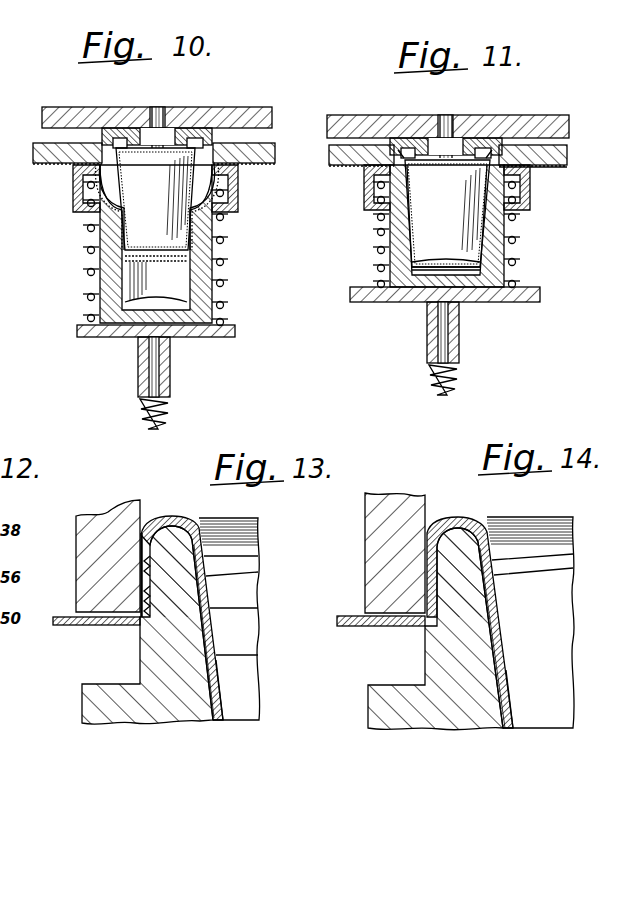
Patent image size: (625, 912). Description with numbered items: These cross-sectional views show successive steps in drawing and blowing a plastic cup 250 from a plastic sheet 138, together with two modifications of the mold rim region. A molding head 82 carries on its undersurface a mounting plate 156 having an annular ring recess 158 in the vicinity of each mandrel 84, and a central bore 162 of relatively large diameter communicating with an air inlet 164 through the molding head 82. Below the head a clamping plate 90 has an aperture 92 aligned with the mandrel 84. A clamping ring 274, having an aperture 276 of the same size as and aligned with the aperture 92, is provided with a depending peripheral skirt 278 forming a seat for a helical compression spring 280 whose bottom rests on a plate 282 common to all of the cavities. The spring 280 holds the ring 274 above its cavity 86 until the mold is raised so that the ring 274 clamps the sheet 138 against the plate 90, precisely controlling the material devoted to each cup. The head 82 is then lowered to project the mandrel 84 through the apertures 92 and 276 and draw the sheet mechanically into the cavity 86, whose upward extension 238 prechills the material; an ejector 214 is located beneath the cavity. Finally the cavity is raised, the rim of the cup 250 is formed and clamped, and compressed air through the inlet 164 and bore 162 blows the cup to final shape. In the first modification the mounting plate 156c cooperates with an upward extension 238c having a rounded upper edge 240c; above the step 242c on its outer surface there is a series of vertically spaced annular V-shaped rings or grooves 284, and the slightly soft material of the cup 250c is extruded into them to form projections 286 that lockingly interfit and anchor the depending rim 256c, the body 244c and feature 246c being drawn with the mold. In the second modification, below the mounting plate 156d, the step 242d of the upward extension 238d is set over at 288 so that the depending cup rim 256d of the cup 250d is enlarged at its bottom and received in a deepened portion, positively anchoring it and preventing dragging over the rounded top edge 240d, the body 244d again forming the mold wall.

In FIG. 10, the molding head 82 is at (225, 107).
In FIG. 11, the molding head 82 is at (532, 115).
In FIG. 10, the mandrel 84 is at (125, 245).
In FIG. 11, the mandrel 84 is at (380, 232).
In FIG. 10, the cavity 86 is at (172, 272).
In FIG. 11, the cavity 86 is at (500, 235).
In FIG. 10, the clamping plate 90 is at (275, 150).
In FIG. 11, the clamping plate 90 is at (568, 160).
In FIG. 10, the aperture 92 is at (214, 140).
In FIG. 10, the plastic sheet 138 is at (270, 164).
In FIG. 10, the mounting plate 156 is at (100, 134).
In FIG. 11, the mounting plate 156 is at (398, 150).
In FIG. 11, the annular ring recess 158 is at (545, 168).
In FIG. 11, the central bore 162 is at (456, 140).
In FIG. 11, the air inlet 164 is at (441, 140).
In FIG. 10, the ejector 214 is at (155, 364).
In FIG. 11, the ejector 214 is at (445, 336).
In FIG. 10, the upward extension 238 is at (125, 225).
In FIG. 11, the cup 250 is at (400, 252).
In FIG. 10, the clamping ring 274 is at (75, 180).
In FIG. 11, the clamping ring 274 is at (532, 195).
In FIG. 10, the aperture 276 is at (80, 200).
In FIG. 11, the aperture 276 is at (366, 172).
In FIG. 10, the depending peripheral skirt 278 is at (240, 192).
In FIG. 11, the depending peripheral skirt 278 is at (372, 200).
In FIG. 10, the helical compression spring 280 is at (225, 236).
In FIG. 11, the helical compression spring 280 is at (518, 245).
In FIG. 10, the plate 282 is at (236, 333).
In FIG. 11, the plate 282 is at (536, 292).
In FIG. 13, the mounting plate 156c is at (135, 512).
In FIG. 13, the upward extension 238c is at (185, 568).
In FIG. 13, the rounded upper edge 240c is at (205, 535).
In FIG. 13, the step 242c is at (135, 626).
In FIG. 13, the body 244c is at (138, 670).
In FIG. 13, the serrations 246c is at (150, 605).
In FIG. 13, the cup 250c is at (256, 658).
In FIG. 13, the depending rim 256c is at (165, 590).
In FIG. 13, the rings or grooves 284 is at (172, 611).
In FIG. 13, the projections 286 is at (148, 578).
In FIG. 14, the mounting plate 156d is at (408, 505).
In FIG. 14, the upward extension 238d is at (467, 565).
In FIG. 14, the rounded top edge 240d is at (492, 540).
In FIG. 14, the step 242d is at (422, 630).
In FIG. 14, the body 244d is at (428, 672).
In FIG. 14, the cup 250d is at (505, 668).
In FIG. 14, the depending cup rim 256d is at (437, 587).
In FIG. 14, the set-over portion 288 is at (437, 616).